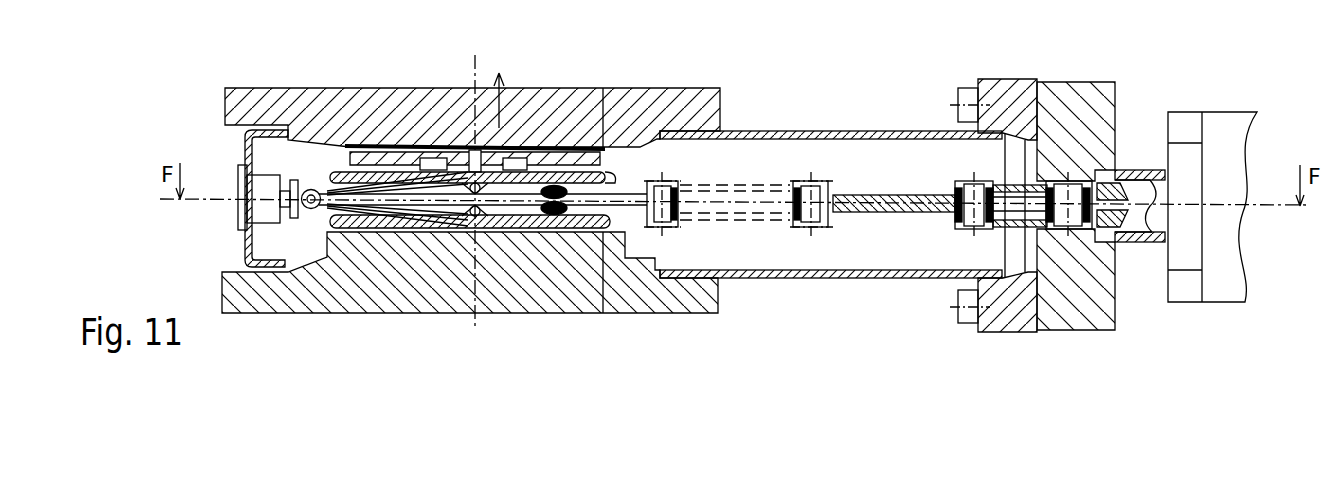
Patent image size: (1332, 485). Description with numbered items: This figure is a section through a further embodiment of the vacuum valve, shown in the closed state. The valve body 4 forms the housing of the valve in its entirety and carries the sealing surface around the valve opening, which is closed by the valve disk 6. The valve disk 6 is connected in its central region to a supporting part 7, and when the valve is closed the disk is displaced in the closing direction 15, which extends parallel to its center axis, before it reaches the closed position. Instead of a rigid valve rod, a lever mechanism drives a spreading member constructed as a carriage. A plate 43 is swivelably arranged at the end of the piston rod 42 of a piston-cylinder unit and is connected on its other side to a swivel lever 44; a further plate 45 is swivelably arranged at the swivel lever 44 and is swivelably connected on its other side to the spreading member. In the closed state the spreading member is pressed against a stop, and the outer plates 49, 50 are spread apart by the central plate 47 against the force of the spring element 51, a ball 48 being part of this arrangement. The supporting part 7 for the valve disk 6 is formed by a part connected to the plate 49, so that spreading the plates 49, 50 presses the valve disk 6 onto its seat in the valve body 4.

The valve body 4 is at (641, 330).
The valve disk 6 is at (425, 160).
The supporting part 7 is at (448, 152).
The closing direction 15 is at (502, 110).
The piston rod 42 is at (1117, 168).
The plate 43 is at (1015, 160).
The swivel lever 44 is at (890, 212).
The plate 45 is at (760, 222).
The central plate 47 is at (595, 198).
The ball 48 is at (555, 216).
The outer plate 49 is at (383, 170).
The outer plate 50 is at (363, 220).
The spring element 51 is at (327, 208).